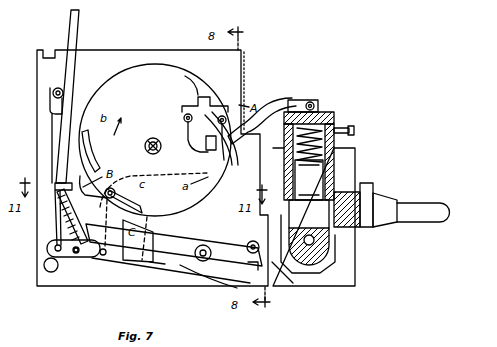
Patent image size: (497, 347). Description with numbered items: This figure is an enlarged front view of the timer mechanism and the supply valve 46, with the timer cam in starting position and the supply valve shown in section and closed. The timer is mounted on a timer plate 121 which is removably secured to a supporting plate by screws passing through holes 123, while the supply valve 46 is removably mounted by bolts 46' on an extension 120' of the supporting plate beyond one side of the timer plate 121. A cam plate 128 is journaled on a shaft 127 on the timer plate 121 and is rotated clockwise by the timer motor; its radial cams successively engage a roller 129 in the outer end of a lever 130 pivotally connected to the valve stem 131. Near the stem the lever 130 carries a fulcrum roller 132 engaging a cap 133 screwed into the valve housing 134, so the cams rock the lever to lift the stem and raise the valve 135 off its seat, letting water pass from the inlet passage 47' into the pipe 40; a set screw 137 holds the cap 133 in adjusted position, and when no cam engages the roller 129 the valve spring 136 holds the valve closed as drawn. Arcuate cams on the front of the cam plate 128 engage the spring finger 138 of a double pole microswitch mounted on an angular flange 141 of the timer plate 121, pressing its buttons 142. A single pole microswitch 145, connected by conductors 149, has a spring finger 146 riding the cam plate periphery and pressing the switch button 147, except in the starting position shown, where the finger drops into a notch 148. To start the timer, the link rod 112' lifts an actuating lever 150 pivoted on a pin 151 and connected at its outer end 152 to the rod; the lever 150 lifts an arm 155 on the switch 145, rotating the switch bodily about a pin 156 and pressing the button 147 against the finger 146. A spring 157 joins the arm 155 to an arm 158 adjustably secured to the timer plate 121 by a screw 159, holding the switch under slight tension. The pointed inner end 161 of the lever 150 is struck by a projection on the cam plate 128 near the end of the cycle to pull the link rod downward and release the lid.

The link rod 112' is at (48, 96).
The timer plate 121 is at (108, 52).
The screw 159 is at (52, 92).
The cam plate 128 is at (117, 88).
The arm 158 is at (56, 128).
The spring 157 is at (60, 206).
The outer end of actuating lever 152 is at (48, 250).
The holes 123 is at (46, 272).
The actuating lever 150 is at (77, 260).
The pin 151 is at (104, 256).
The shaft 127 is at (150, 155).
The roller 129 is at (208, 165).
The pointed inner end 161 is at (107, 190).
The notch 148 is at (166, 209).
The switch buttons 142 is at (210, 98).
The spring finger 138 is at (206, 143).
The angular flange 141 is at (237, 70).
The lever 130 is at (270, 110).
The fulcrum roller 132 is at (298, 100).
The valve stem 131 is at (322, 108).
The cap 133 is at (338, 115).
The valve housing 134 is at (342, 138).
The valve spring 136 is at (342, 150).
The set screw 137 is at (355, 130).
The extension 120' is at (324, 232).
The valve 135 is at (325, 235).
The inlet passage 47' is at (309, 277).
The supply valve 46 is at (363, 197).
The pipe 40 is at (432, 228).
The spring finger 146 is at (180, 247).
The switch button 147 is at (205, 245).
The bolts 46' is at (256, 238).
The single pole single throw microswitch 145 is at (166, 288).
The conductors 149 is at (216, 290).
The pin 156 is at (254, 263).
The arm 155 is at (158, 265).